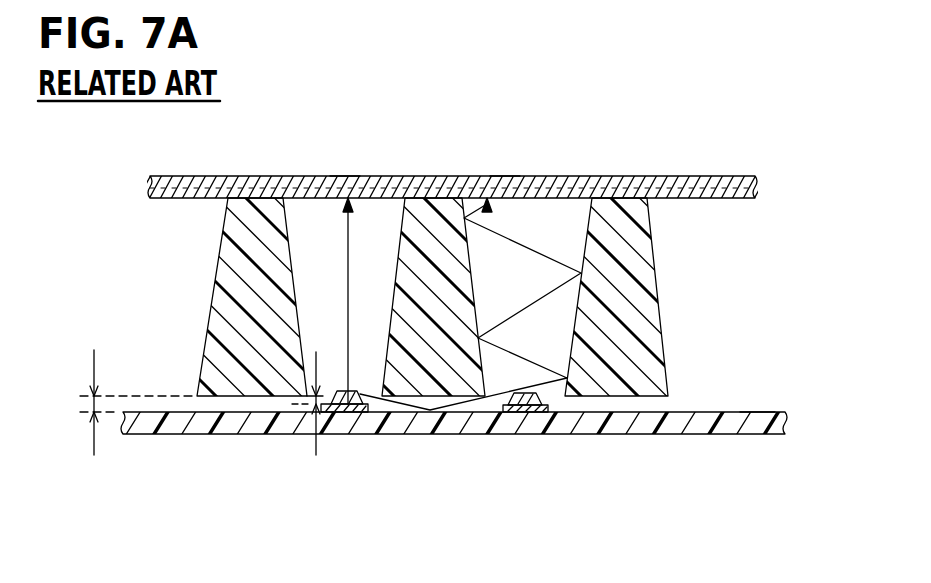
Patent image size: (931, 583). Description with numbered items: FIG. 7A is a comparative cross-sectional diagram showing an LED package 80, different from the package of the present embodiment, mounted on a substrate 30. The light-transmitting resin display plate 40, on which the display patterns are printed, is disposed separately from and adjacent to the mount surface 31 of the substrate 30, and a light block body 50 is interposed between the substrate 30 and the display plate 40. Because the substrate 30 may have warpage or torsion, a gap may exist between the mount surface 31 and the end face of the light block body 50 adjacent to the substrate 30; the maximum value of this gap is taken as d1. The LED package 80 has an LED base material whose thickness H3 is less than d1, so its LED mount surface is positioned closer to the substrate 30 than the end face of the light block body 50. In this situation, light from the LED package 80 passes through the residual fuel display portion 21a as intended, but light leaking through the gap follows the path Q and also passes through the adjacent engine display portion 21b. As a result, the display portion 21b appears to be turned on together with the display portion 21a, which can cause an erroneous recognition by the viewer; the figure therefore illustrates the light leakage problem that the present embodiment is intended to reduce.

The residual fuel display portion 21a is at (343, 176).
The engine display portion 21b is at (505, 176).
The path Q is at (553, 262).
The display plate 40 is at (690, 177).
The light block body 50 is at (655, 283).
The LED package 80 is at (347, 390).
The substrate 30 is at (692, 427).
The mount surface 31 is at (762, 412).
The maximum value of the gap d1 is at (97, 402).
The thickness of the LED base material H3 is at (312, 403).